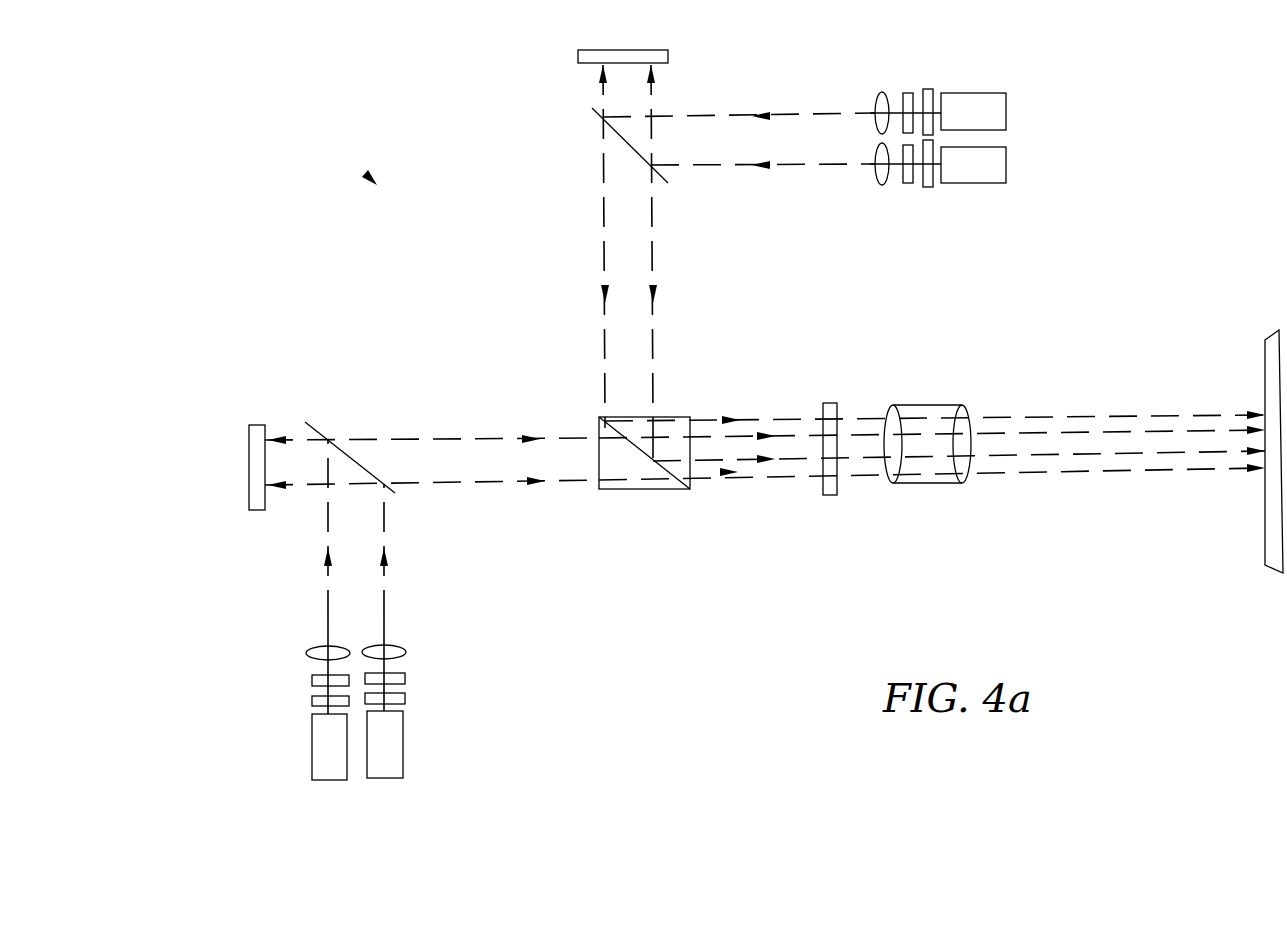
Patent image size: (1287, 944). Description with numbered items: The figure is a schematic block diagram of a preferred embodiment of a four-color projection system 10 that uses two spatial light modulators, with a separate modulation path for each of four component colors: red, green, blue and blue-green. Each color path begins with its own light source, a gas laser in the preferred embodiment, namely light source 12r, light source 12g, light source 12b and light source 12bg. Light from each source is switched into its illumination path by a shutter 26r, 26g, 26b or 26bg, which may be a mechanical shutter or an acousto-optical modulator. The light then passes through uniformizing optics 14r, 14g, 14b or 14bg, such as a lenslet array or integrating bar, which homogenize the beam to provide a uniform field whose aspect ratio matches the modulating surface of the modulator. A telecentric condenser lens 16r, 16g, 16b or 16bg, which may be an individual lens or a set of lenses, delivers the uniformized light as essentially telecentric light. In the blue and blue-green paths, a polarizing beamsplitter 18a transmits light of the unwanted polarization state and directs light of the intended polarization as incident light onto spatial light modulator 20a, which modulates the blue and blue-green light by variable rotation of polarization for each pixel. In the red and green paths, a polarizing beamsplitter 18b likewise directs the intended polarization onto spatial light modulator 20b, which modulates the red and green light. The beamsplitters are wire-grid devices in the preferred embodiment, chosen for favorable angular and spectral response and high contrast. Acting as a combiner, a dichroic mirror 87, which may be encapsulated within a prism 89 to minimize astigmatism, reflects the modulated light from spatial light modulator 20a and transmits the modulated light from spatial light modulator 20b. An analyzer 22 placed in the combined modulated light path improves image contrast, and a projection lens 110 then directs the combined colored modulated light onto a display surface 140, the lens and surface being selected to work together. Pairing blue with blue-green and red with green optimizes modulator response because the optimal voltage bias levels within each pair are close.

The projection system 10 is at (377, 185).
The spatial light modulator 20a is at (665, 50).
The polarizing beamsplitter 18a is at (598, 110).
The telecentric condenser lens 16b is at (876, 94).
The uniformizing optics 14b is at (908, 92).
The shutter 26b is at (928, 89).
The light source 12b is at (1006, 112).
The telecentric condenser lens 16bg is at (880, 186).
The uniformizing optics 14bg is at (908, 183).
The shutter 26bg is at (928, 187).
The light source 12bg is at (1006, 164).
The spatial light modulator 20b is at (258, 425).
The polarizing beamsplitter 18b is at (312, 424).
The telecentric condenser lens 16r is at (312, 650).
The uniformizing optics 14r is at (312, 680).
The shutter 26r is at (312, 700).
The light source 12r is at (312, 730).
The telecentric condenser lens 16g is at (406, 645).
The uniformizing optics 14g is at (405, 678).
The shutter 26g is at (410, 698).
The light source 12g is at (403, 734).
The prism 89 is at (625, 489).
The dichroic mirror 87 is at (665, 472).
The analyzer 22 is at (826, 403).
The projection lens 110 is at (930, 405).
The display surface 140 is at (1265, 356).